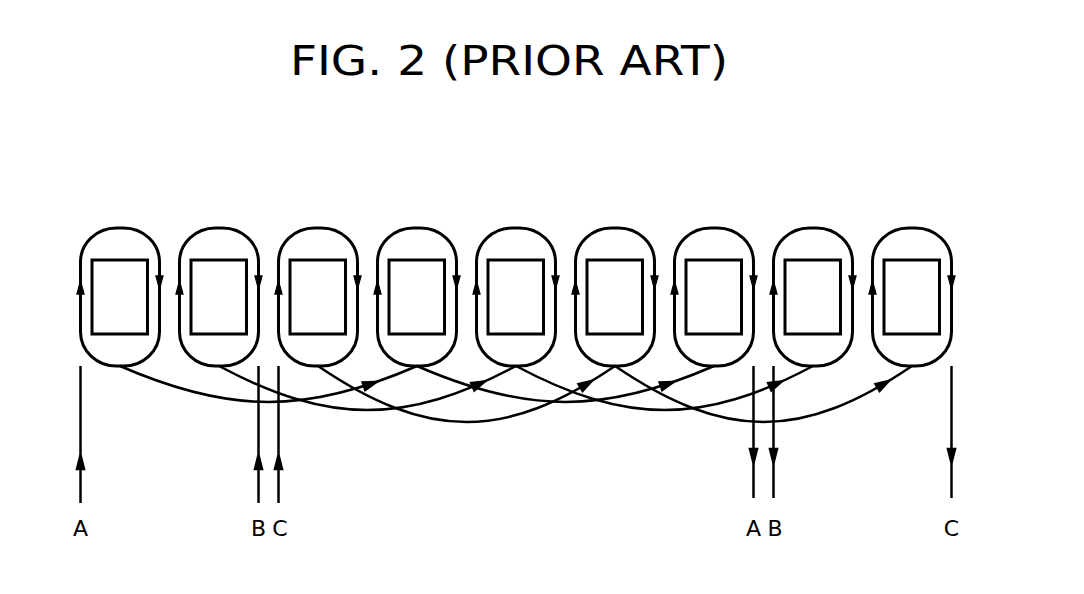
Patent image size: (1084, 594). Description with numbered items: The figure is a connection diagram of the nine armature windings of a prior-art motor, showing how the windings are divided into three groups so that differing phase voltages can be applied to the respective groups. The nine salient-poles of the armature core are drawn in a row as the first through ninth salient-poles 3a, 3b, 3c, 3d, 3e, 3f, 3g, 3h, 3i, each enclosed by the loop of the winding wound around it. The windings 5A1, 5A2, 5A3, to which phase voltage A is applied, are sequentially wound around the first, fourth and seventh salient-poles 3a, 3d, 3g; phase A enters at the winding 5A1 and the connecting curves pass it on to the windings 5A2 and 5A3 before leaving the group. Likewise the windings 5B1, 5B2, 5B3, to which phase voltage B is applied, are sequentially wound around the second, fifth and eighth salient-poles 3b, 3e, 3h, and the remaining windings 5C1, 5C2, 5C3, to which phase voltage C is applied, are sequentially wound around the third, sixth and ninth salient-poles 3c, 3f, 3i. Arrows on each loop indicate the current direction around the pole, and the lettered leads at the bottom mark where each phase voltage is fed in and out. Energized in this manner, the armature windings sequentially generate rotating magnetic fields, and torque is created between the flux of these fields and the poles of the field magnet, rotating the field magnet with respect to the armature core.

The armature winding 5A1 is at (120, 227).
The armature winding 5B1 is at (219, 227).
The armature winding 5C1 is at (318, 227).
The armature winding 5A2 is at (417, 227).
The armature winding 5B2 is at (516, 227).
The armature winding 5C2 is at (615, 227).
The armature winding 5A3 is at (714, 227).
The armature winding 5B3 is at (813, 227).
The armature winding 5C3 is at (912, 227).
The first salient-pole 3a is at (120, 297).
The second salient-pole 3b is at (219, 297).
The third salient-pole 3c is at (318, 297).
The fourth salient-pole 3d is at (417, 297).
The fifth salient-pole 3e is at (516, 297).
The sixth salient-pole 3f is at (615, 297).
The seventh salient-pole 3g is at (714, 297).
The eighth salient-pole 3h is at (813, 297).
The ninth salient-pole 3i is at (912, 297).